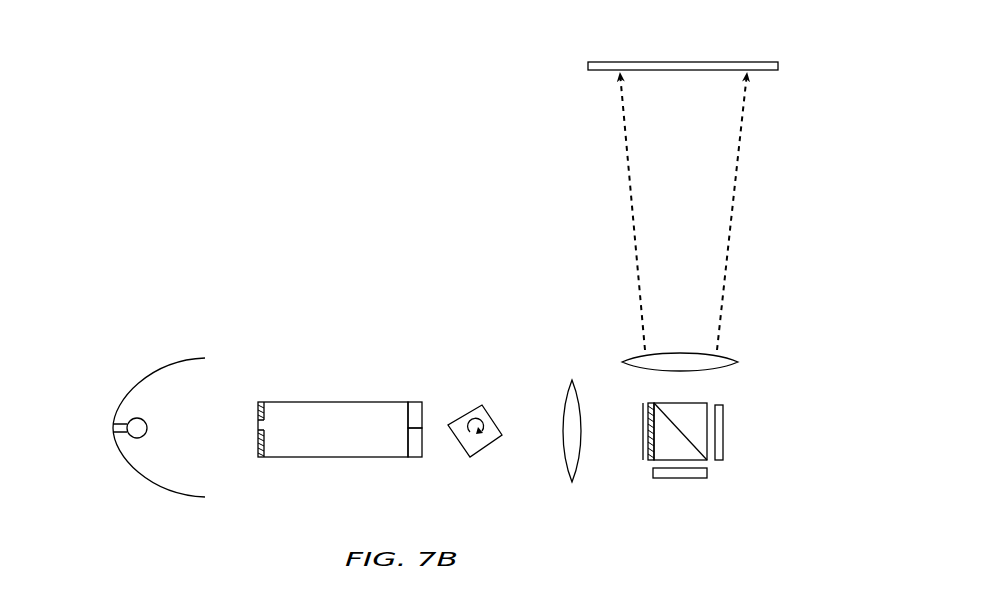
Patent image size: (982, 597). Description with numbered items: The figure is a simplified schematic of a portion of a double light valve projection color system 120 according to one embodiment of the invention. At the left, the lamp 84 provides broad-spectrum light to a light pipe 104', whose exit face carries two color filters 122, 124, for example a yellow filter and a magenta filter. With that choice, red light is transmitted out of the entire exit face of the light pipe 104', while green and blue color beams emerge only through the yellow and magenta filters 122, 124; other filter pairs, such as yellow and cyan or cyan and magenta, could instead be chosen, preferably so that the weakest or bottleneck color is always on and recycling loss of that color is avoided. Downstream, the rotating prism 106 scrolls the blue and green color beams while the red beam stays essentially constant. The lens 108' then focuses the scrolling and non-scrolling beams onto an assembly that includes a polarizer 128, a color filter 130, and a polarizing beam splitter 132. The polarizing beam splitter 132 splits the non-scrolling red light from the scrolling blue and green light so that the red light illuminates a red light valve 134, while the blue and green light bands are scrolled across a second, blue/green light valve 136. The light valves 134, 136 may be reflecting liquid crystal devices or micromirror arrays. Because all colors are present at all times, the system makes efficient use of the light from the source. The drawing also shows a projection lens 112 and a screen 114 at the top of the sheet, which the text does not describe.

The double light valve projection color system 120 is at (183, 150).
The lamp 84 is at (97, 407).
The light pipe 104' is at (333, 462).
The color filter 122 is at (415, 403).
The color filter 124 is at (415, 456).
The rotating prism 106 is at (483, 450).
The lens 108' is at (551, 413).
The screen / display plate 114 is at (717, 61).
The projection lens 112 is at (725, 358).
The polarizer 128 is at (643, 413).
The color filter 130 is at (649, 460).
The polarizing beam splitter 132 is at (678, 432).
The light valve (red light valve) 134 is at (725, 432).
The second light valve (blue/green light valve) 136 is at (680, 478).